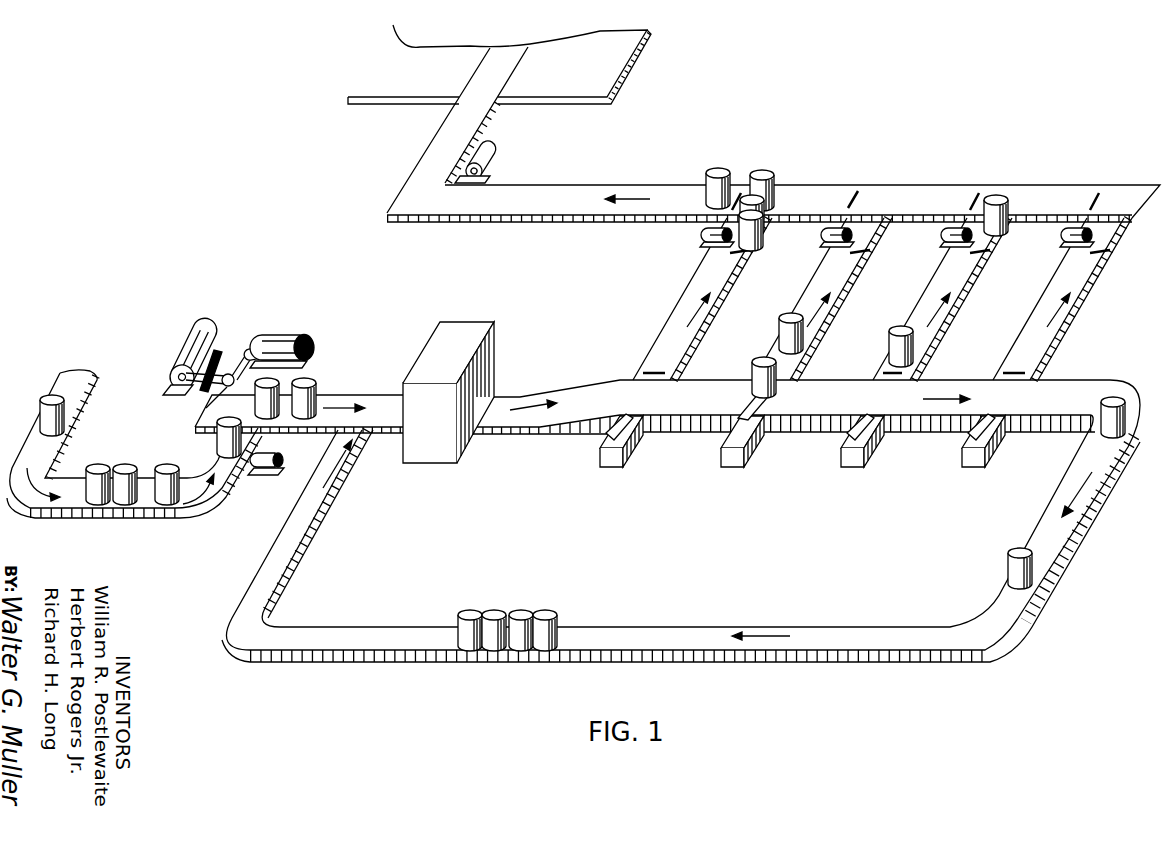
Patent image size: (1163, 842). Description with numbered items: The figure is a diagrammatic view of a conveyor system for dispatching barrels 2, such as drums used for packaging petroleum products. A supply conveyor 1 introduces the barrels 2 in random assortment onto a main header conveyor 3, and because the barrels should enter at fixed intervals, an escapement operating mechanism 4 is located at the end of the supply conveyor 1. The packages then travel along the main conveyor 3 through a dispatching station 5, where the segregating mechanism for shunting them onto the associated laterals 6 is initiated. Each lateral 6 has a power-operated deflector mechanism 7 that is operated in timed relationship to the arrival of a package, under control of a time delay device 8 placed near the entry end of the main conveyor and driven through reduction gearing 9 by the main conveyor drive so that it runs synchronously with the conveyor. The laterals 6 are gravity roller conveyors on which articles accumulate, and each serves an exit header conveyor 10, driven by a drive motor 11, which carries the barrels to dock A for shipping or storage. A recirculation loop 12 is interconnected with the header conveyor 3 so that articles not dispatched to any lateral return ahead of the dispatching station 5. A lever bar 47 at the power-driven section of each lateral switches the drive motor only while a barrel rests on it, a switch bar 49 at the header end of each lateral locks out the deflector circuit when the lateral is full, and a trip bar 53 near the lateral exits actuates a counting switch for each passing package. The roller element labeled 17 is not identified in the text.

The supply conveyor 1 is at (92, 376).
The barrels 2 is at (127, 462).
The main conveyor 3 is at (341, 394).
The escapement operating mechanism 4 is at (270, 475).
The dispatching station 5 is at (473, 322).
The laterals 6 is at (679, 300).
The power-operated deflector mechanism 7 is at (600, 459).
The time delay device 8 is at (293, 333).
The reduction gearing 9 is at (245, 350).
The exit header conveyor 10 is at (900, 184).
The drive motor 11 is at (493, 162).
The recirculation loop 12 is at (833, 627).
The roller device 17 is at (193, 332).
The lever bar 47 is at (728, 253).
The switch bar 49 is at (650, 371).
The trip bar 53 is at (741, 192).